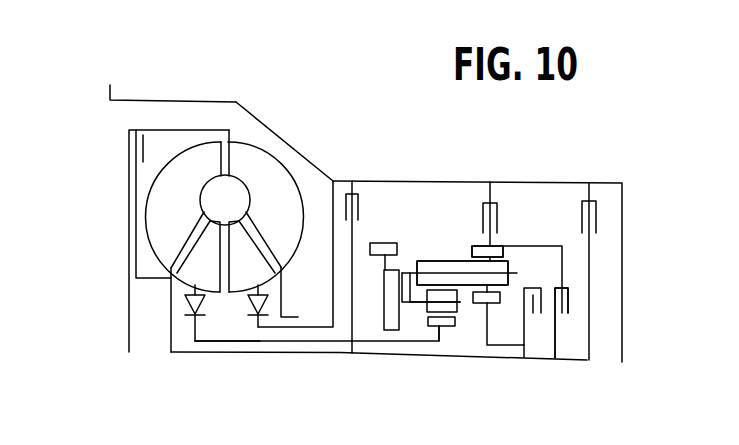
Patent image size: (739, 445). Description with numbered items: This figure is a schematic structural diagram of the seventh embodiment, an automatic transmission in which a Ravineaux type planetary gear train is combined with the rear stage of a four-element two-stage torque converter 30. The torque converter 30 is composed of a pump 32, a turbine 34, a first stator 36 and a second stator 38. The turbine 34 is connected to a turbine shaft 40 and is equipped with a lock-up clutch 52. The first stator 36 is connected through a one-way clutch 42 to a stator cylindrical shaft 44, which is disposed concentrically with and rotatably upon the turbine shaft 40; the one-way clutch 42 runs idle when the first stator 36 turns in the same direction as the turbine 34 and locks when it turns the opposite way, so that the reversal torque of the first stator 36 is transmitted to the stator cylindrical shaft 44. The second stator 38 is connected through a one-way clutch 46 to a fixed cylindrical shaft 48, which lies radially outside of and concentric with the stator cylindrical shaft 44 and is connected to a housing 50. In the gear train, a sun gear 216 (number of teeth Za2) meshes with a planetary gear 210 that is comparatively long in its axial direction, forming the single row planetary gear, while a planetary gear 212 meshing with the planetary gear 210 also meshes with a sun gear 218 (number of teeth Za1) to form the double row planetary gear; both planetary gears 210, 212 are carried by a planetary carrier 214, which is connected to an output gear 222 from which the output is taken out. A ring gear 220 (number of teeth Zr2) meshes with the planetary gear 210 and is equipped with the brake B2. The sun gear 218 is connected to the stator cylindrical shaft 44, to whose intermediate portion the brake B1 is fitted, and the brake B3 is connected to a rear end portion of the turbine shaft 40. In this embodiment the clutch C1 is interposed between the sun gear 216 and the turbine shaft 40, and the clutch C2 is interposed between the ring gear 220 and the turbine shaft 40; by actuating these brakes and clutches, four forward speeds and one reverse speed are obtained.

The torque converter 30 is at (211, 87).
The pump 32 is at (270, 173).
The turbine 34 is at (167, 217).
The first stator 36 is at (192, 268).
The second stator 38 is at (209, 342).
The turbine shaft 40 is at (175, 353).
The one-way clutch 42 is at (188, 298).
The stator cylindrical shaft 44 is at (291, 342).
The one-way clutch 46 is at (237, 285).
The fixed cylindrical shaft 48 is at (318, 330).
The housing 50 is at (318, 165).
The lock-up clutch 52 is at (137, 176).
The planetary gear 210 is at (424, 261).
The planetary gear 212 is at (458, 303).
The planetary carrier 214 is at (392, 332).
The sun gear 216 is at (502, 303).
The sun gear 218 is at (430, 356).
The ring gear 220 is at (503, 253).
The output gear 222 is at (392, 243).
The brake B1 is at (358, 253).
The brake B2 is at (492, 202).
The brake B3 is at (590, 259).
The number of teeth of ring gear Zr2 is at (467, 240).
The clutch C1 is at (478, 273).
The clutch C2 is at (569, 311).
The number of teeth of sun gear Za1 is at (451, 337).
The number of teeth of sun gear Za2 is at (498, 315).